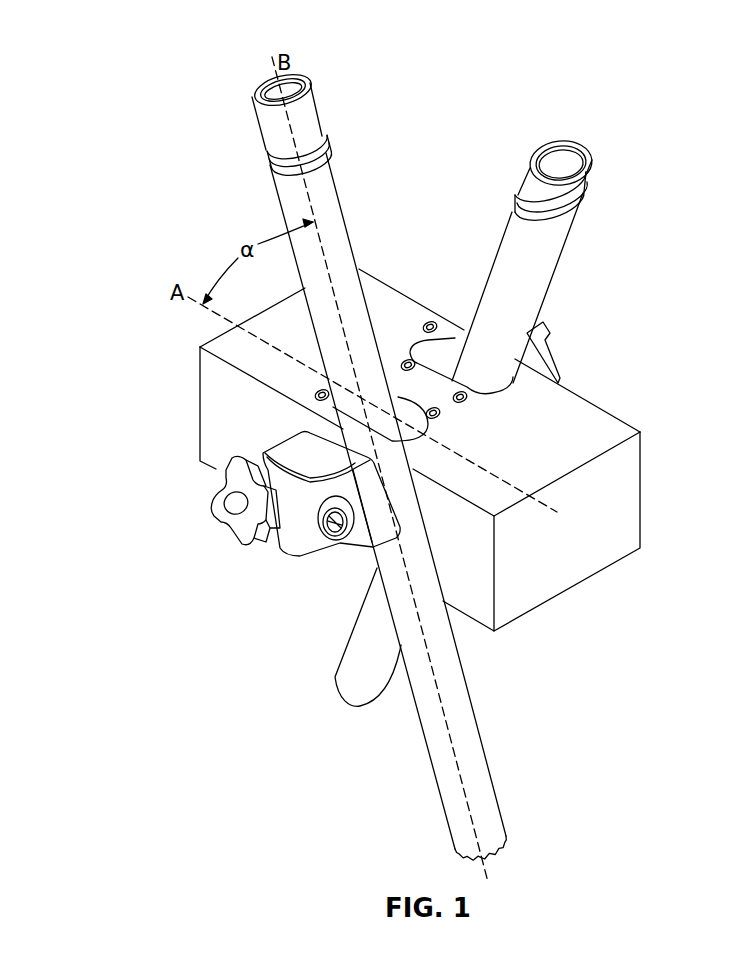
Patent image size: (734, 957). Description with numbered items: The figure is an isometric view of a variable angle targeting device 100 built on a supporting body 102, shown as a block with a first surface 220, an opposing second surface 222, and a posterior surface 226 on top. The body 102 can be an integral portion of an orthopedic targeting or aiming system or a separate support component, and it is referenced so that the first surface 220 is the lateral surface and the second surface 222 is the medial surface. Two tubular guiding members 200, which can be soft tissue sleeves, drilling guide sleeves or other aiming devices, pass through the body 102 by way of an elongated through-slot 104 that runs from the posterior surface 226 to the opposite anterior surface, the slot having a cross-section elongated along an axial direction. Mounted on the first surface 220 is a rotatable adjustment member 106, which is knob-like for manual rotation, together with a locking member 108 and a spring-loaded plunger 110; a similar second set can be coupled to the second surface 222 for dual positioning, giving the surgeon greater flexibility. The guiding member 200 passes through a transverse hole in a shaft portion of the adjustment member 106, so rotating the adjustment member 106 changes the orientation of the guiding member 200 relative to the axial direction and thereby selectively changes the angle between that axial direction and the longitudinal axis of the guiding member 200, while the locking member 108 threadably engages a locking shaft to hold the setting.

The variable angle targeting device 100 is at (220, 86).
The body 102 is at (610, 550).
The elongated through-slot 104 is at (450, 358).
The rotatable adjustment member 106 is at (296, 546).
The locking member 108 is at (228, 518).
The spring-loaded plunger 110 is at (339, 545).
The tubular guiding member 200 is at (287, 203).
The first surface 220 is at (347, 489).
The second surface 222 is at (588, 398).
The posterior surface 226 is at (420, 402).